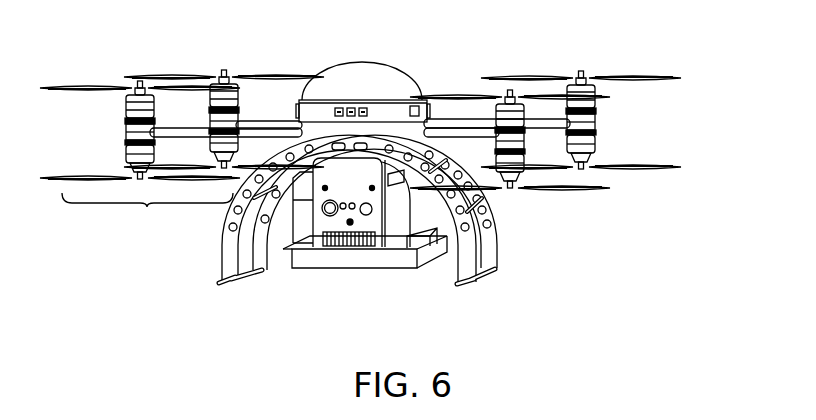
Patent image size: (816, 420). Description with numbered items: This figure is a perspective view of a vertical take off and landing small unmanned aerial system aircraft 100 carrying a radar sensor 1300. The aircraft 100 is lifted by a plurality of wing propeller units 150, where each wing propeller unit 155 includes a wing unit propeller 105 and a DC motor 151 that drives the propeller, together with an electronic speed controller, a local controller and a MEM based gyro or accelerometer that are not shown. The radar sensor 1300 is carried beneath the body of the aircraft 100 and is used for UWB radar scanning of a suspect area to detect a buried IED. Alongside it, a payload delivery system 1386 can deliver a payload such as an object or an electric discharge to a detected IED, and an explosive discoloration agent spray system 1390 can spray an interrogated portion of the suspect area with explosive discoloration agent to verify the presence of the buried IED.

The aircraft 100 is at (380, 176).
The wing unit propeller 105 is at (630, 80).
The DC motor 151 is at (591, 86).
The wing propeller unit 155 is at (388, 129).
The plurality of wing propeller units 150 is at (147, 214).
The radar sensor 1300 is at (350, 238).
The explosive discoloration agent spray system 1390 is at (387, 238).
The payload delivery system 1386 is at (412, 266).